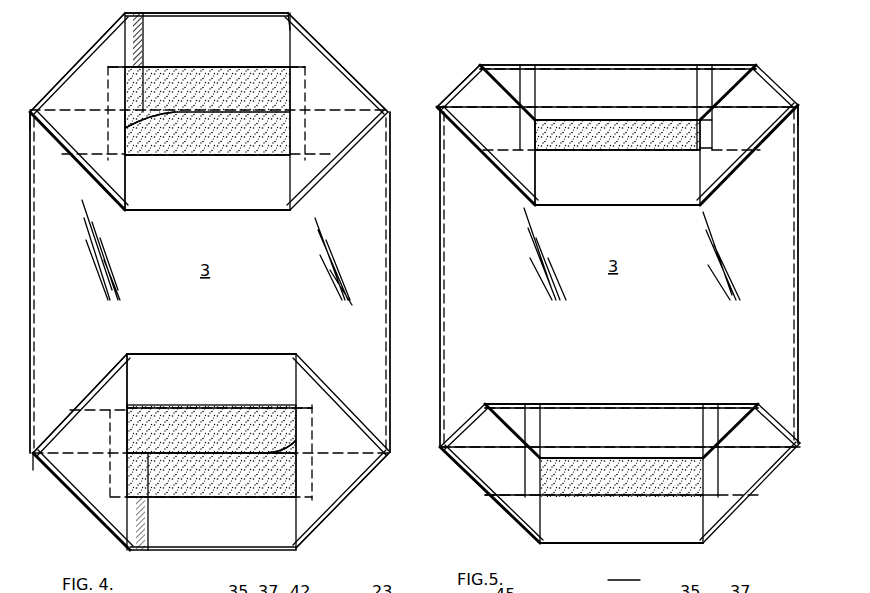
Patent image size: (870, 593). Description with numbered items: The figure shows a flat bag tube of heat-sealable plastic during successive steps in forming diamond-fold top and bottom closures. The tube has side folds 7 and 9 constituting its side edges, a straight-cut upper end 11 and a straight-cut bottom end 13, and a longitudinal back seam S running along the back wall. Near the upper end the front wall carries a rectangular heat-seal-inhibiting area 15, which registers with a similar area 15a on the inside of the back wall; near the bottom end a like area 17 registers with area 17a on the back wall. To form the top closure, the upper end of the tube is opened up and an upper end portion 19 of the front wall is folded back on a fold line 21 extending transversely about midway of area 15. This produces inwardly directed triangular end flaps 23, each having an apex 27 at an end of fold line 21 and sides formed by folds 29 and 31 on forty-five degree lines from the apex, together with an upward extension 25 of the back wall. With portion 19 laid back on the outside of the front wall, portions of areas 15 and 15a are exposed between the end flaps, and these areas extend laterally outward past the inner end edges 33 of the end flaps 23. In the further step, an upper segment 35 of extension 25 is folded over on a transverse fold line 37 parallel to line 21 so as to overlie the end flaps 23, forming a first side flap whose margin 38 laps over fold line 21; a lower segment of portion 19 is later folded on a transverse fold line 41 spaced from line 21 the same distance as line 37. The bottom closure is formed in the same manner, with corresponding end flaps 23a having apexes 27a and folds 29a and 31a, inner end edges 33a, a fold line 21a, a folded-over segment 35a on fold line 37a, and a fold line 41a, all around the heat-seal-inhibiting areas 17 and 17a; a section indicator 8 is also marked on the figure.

In FIG. 4, the side fold 7 is at (30, 292).
In FIG. 5, the side fold 7 is at (440, 268).
In FIG. 5, the section line 8 is at (634, 576).
In FIG. 4, the side fold 9 is at (390, 294).
In FIG. 5, the side fold 9 is at (798, 318).
In FIG. 4, the upper end 11 is at (165, 14).
In FIG. 5, the upper end 11 is at (535, 130).
In FIG. 4, the bottom end 13 is at (172, 352).
In FIG. 4, the heat-seal-inhibiting area 15 is at (201, 148).
In FIG. 5, the heat-seal-inhibiting area 15 is at (632, 150).
In FIG. 4, the heat-seal-inhibiting area 15a is at (216, 78).
In FIG. 4, the heat-seal-inhibiting area 17 is at (198, 490).
In FIG. 4, the heat-seal-inhibiting area 17a is at (212, 406).
In FIG. 4, the upper end portion 19 is at (152, 211).
In FIG. 5, the upper end portion 19 is at (596, 204).
In FIG. 4, the fold line 21 is at (165, 117).
In FIG. 5, the fold line 21 is at (554, 110).
In FIG. 4, the fold line 21a is at (280, 455).
In FIG. 5, the fold line 21a is at (478, 450).
In FIG. 4, the end flap 23 is at (75, 86).
In FIG. 5, the end flap 23 is at (475, 90).
In FIG. 4, the end flap 23a is at (68, 474).
In FIG. 5, the end flap 23a is at (492, 482).
In FIG. 4, the upward extension 25 is at (290, 20).
In FIG. 4, the apex 27 is at (30, 112).
In FIG. 5, the apex 27 is at (798, 105).
In FIG. 4, the apex 27a is at (33, 453).
In FIG. 4, the fold 29 is at (88, 164).
In FIG. 5, the fold 29 is at (500, 176).
In FIG. 4, the fold 29a is at (96, 385).
In FIG. 4, the fold 31 is at (100, 52).
In FIG. 4, the fold 31a is at (80, 498).
In FIG. 4, the inner end edge 33 is at (127, 168).
In FIG. 5, the inner end edge 33 is at (537, 180).
In FIG. 4, the inner end edge 33a is at (128, 386).
In FIG. 5, the upper segment 35 is at (620, 67).
In FIG. 5, the segment 35a is at (652, 406).
In FIG. 4, the transverse fold line 37 is at (270, 70).
In FIG. 5, the transverse fold line 37 is at (548, 66).
In FIG. 4, the transverse fold line 37a is at (266, 404).
In FIG. 5, the transverse fold line 37a is at (570, 406).
In FIG. 5, the margin 38 is at (698, 115).
In FIG. 4, the transverse fold line 41 is at (242, 158).
In FIG. 5, the transverse fold line 41 is at (545, 150).
In FIG. 4, the transverse fold line 41a is at (246, 498).
In FIG. 5, the transverse fold line 41a is at (740, 500).
In FIG. 4, the longitudinal seam S is at (143, 40).